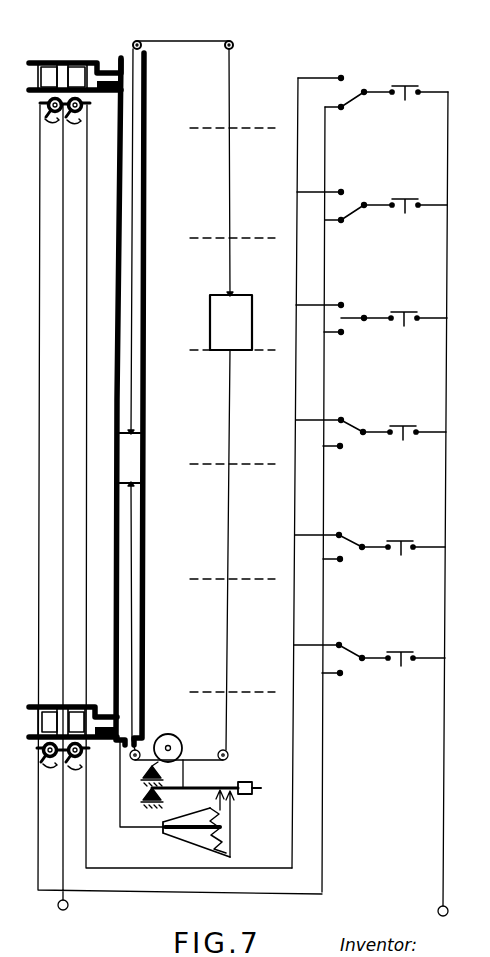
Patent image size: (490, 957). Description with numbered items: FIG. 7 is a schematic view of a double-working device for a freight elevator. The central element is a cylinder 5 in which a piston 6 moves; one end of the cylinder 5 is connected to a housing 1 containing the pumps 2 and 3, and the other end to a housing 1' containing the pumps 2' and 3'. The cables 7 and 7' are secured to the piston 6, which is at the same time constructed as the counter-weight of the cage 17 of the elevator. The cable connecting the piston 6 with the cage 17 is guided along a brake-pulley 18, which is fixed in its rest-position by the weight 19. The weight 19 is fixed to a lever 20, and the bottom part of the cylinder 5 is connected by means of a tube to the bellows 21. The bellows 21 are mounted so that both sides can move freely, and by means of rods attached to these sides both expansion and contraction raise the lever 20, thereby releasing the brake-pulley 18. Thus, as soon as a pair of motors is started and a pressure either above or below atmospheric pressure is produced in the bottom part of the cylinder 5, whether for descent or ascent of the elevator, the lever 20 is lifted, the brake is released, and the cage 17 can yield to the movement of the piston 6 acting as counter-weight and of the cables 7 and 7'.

The housing 1 is at (75, 66).
The pump 2 is at (48, 48).
The pump 3 is at (80, 50).
The housing 1' is at (73, 712).
The pump 2' is at (47, 693).
The pump 3' is at (77, 695).
The cylinder 5 is at (147, 258).
The piston 6 is at (123, 467).
The cable 7 is at (235, 550).
The cable 7' is at (237, 172).
The cage 17 is at (224, 331).
The brake-pulley 18 is at (176, 736).
The weight 19 is at (247, 782).
The lever 20 is at (212, 788).
The bellows 21 is at (188, 828).